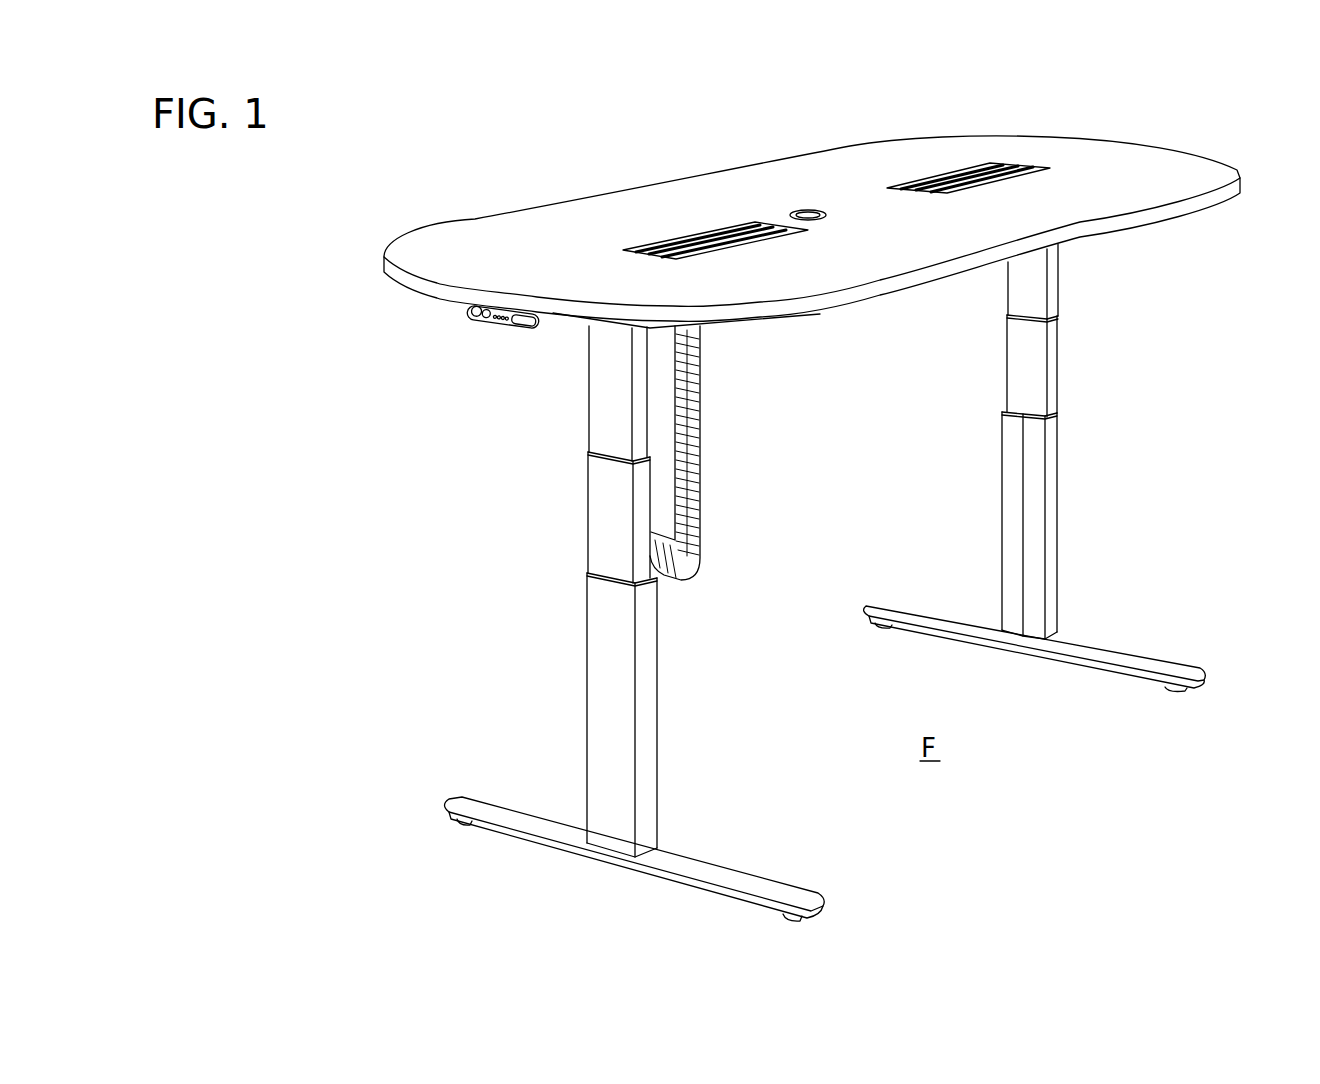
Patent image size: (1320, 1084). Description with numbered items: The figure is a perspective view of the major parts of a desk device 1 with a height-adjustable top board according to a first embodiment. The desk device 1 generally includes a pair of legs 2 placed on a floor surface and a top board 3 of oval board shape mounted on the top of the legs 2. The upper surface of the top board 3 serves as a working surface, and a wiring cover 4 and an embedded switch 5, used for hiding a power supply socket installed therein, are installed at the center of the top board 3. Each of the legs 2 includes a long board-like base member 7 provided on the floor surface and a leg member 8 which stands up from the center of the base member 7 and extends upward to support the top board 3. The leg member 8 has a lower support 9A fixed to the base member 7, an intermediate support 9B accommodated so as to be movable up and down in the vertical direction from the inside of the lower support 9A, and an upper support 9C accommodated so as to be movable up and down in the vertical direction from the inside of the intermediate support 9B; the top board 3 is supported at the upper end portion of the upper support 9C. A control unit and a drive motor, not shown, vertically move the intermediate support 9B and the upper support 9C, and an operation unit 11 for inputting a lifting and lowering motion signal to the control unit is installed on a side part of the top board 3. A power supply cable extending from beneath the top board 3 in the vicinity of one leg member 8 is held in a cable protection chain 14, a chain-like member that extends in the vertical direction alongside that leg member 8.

The desk device 1 is at (416, 211).
The legs 2 is at (565, 580).
The top board 3 is at (535, 226).
The wiring cover 4 is at (712, 232).
The embedded switch 5 is at (815, 209).
The base member 7 is at (760, 882).
The leg member 8 is at (667, 682).
The lower support 9A is at (593, 650).
The intermediate support 9B is at (595, 496).
The upper support 9C is at (590, 384).
The operation unit 11 is at (467, 313).
The cable protection chain 14 is at (703, 455).